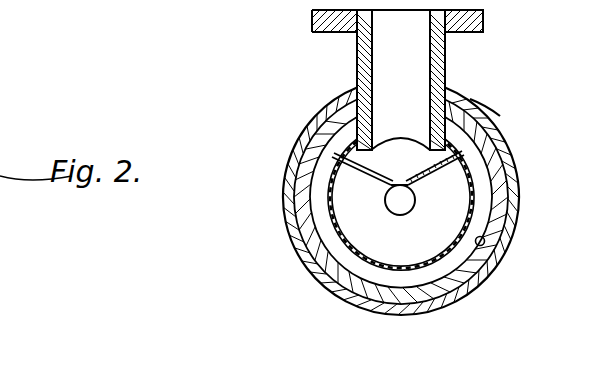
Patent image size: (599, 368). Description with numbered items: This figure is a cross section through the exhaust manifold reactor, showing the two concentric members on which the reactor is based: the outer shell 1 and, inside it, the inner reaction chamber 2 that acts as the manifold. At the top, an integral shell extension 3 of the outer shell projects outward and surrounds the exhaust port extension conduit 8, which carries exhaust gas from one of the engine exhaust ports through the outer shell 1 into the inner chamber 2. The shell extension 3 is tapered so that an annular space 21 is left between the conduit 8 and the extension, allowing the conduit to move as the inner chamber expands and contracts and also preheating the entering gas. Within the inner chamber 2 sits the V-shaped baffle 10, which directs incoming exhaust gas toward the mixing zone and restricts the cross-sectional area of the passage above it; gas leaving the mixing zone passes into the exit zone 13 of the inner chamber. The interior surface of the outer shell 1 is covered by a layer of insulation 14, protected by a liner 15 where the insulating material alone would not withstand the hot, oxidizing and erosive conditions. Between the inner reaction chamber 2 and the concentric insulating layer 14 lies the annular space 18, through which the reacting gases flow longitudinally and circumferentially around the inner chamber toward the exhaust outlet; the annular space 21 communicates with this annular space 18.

The outer shell 1 is at (521, 155).
The inner reaction chamber 2 is at (471, 214).
The shell extension 3 is at (446, 68).
The exhaust port extension conduit 8 is at (372, 82).
The baffle 10 is at (410, 168).
The exit zone 13 is at (418, 250).
The insulation layer 14 is at (517, 190).
The liner 15 is at (486, 242).
The annular space 18 is at (482, 213).
The annular space 21 is at (485, 117).